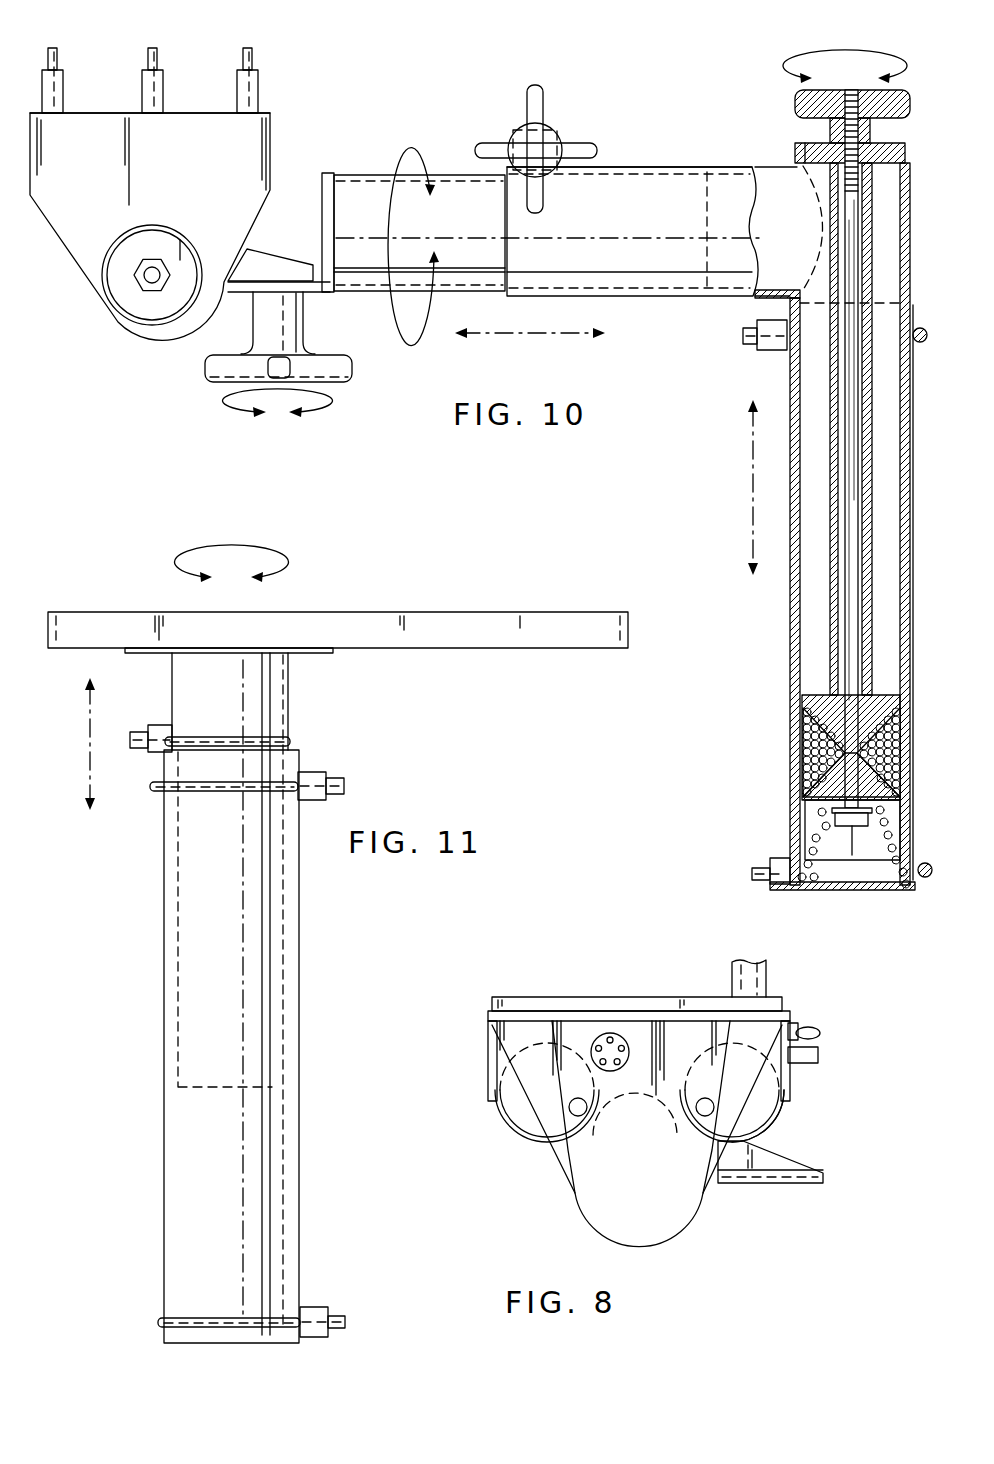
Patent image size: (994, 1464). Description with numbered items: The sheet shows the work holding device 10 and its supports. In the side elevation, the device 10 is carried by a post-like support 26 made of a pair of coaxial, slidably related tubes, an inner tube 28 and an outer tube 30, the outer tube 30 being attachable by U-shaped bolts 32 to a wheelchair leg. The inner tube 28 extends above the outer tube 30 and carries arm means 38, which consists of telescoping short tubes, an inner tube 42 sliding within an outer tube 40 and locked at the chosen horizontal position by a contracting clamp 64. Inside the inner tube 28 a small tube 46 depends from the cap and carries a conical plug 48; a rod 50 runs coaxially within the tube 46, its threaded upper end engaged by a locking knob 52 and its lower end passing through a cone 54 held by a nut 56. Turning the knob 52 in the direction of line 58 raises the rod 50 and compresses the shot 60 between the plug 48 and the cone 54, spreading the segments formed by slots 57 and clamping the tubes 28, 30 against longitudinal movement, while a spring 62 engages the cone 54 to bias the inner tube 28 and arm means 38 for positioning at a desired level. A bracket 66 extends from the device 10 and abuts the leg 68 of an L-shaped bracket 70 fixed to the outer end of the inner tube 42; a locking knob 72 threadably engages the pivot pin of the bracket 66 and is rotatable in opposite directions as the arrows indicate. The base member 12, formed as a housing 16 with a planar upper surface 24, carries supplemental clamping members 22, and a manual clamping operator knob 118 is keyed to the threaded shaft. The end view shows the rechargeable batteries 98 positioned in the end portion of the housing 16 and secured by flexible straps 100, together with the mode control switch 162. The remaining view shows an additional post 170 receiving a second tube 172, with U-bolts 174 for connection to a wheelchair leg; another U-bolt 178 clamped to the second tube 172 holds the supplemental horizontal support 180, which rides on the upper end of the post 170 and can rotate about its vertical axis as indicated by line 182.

In FIG. 10, the work holding device 10 is at (202, 98).
In FIG. 8, the base member 12 is at (462, 1099).
In FIG. 10, the housing 16 is at (57, 210).
In FIG. 8, the housing 16 is at (681, 1227).
In FIG. 10, the supplemental clamping members 22 is at (148, 87).
In FIG. 8, the planar upper surface 24 is at (623, 998).
In FIG. 10, the post-like support 26 is at (772, 700).
In FIG. 10, the inner tube 28 is at (812, 368).
In FIG. 10, the outer tube 30 is at (787, 474).
In FIG. 10, the U-shaped bolts 32 is at (921, 327).
In FIG. 10, the arm means 38 is at (669, 158).
In FIG. 10, the outer tube 40 is at (652, 275).
In FIG. 10, the inner tube 42 is at (361, 185).
In FIG. 10, the tube 46 is at (830, 632).
In FIG. 10, the conical plug 48 is at (809, 747).
In FIG. 10, the rod 50 is at (850, 585).
In FIG. 10, the locking knob 52 is at (800, 105).
In FIG. 10, the cone 54 is at (834, 785).
In FIG. 10, the nut 56 is at (838, 820).
In FIG. 10, the slots 57 is at (852, 852).
In FIG. 10, the line 58 is at (850, 46).
In FIG. 10, the shot 60 is at (822, 757).
In FIG. 10, the spring 62 is at (887, 830).
In FIG. 10, the contracting clamp 64 is at (554, 124).
In FIG. 10, the bracket 66 is at (261, 250).
In FIG. 8, the bracket 66 is at (758, 1174).
In FIG. 10, the leg 68 is at (283, 290).
In FIG. 10, the L-shaped bracket 70 is at (330, 240).
In FIG. 10, the locking knob 72 is at (207, 364).
In FIG. 8, the rechargeable batteries 98 is at (520, 1112).
In FIG. 8, the flexible straps 100 is at (773, 1128).
In FIG. 10, the manual clamping operator knob 118 is at (181, 230).
In FIG. 8, the mode control switch 162 is at (806, 1026).
In FIG. 11, the additional post 170 is at (300, 947).
In FIG. 11, the second tube 172 is at (267, 695).
In FIG. 11, the U-bolts 174 is at (153, 784).
In FIG. 11, the U-bolt 178 is at (292, 739).
In FIG. 11, the supplemental horizontal support 180 is at (425, 610).
In FIG. 11, the indicating line 182 is at (238, 545).